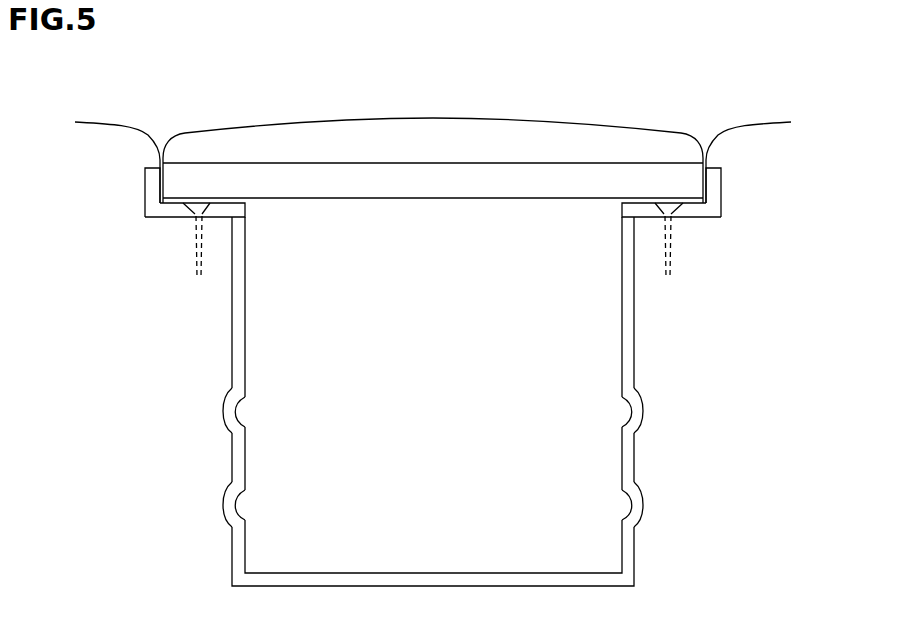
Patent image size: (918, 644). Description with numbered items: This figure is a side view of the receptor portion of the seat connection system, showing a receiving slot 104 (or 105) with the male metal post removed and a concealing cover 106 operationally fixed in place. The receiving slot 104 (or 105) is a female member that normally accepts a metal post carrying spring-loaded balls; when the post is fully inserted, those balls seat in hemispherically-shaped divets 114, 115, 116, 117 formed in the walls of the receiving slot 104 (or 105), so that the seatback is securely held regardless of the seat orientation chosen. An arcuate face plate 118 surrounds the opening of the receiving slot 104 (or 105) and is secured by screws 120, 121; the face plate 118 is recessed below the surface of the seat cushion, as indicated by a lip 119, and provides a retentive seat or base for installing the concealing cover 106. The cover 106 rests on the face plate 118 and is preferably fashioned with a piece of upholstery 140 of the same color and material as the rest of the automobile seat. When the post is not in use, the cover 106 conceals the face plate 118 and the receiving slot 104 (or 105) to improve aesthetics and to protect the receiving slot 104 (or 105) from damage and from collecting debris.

The female receiving slot member 104 is at (540, 401).
The female receiving slot member 105 is at (637, 360).
The concealing cover 106 is at (590, 180).
The hemispherically-shaped divet 114 is at (644, 414).
The hemispherically-shaped divet 115 is at (644, 493).
The hemispherically-shaped divet 116 is at (221, 414).
The hemispherically-shaped divet 117 is at (221, 491).
The arcuate face plate 118 is at (168, 206).
The lip 119 is at (147, 188).
The screw 120 is at (673, 268).
The screw 121 is at (195, 263).
The upholstery 140 is at (135, 120).